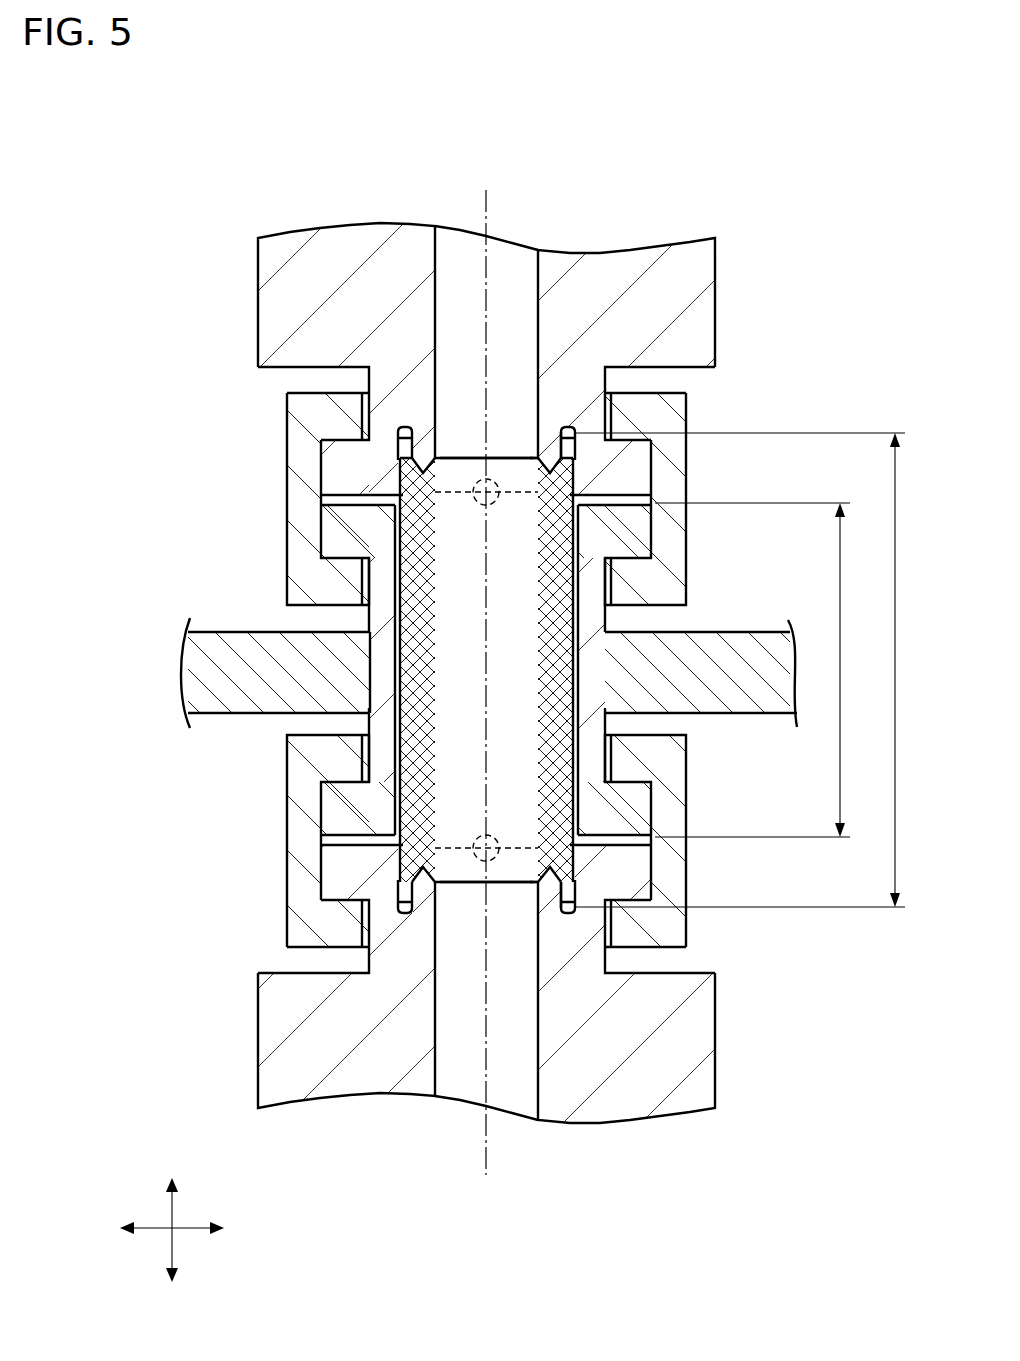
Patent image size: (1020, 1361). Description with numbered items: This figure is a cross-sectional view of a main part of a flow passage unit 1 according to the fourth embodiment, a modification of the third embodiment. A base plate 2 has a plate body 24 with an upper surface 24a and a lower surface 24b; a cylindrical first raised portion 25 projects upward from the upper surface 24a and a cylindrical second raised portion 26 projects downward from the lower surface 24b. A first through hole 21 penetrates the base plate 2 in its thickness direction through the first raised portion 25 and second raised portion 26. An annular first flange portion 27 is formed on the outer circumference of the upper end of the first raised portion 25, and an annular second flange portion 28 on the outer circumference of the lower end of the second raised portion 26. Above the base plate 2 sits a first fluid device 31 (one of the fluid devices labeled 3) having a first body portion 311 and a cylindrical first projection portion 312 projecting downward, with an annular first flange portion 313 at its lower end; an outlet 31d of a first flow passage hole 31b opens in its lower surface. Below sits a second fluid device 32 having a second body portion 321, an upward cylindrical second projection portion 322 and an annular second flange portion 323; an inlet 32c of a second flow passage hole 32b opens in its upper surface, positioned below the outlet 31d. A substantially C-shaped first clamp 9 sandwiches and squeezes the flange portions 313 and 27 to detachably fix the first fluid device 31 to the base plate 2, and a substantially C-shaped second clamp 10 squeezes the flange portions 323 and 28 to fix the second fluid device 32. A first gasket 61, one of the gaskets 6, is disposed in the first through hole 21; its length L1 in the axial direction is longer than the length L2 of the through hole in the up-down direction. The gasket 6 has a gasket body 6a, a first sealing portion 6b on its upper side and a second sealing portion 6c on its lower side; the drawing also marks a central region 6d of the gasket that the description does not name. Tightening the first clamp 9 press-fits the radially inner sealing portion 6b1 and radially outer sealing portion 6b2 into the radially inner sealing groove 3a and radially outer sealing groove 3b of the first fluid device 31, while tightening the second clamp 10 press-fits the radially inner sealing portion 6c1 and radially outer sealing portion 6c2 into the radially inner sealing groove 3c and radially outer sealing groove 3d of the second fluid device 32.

The flow passage unit 1 is at (163, 152).
The base plate 2 is at (194, 616).
The housing 3 is at (444, 685).
The radially inner sealing groove 3a is at (521, 455).
The radially outer sealing groove 3b is at (566, 425).
The radially inner sealing groove 3c is at (521, 887).
The radially outer sealing groove 3d is at (566, 918).
The gasket 6 is at (458, 672).
The gasket body 6a is at (432, 597).
The first sealing portion 6b is at (435, 166).
The radially inner sealing portion 6b1 is at (430, 462).
The radially outer sealing portion 6b2 is at (405, 425).
The second sealing portion 6c is at (435, 1174).
The radially inner sealing portion 6c1 is at (430, 880).
The radially outer sealing portion 6c2 is at (405, 918).
The seal inner space 6d is at (523, 684).
The first gasket 61 is at (461, 448).
The first clamp 9 is at (695, 462).
The second clamp 10 is at (695, 800).
The first through hole 21 is at (388, 668).
The plate body 24 is at (718, 645).
The upper surface 24a is at (785, 640).
The lower surface 24b is at (745, 705).
The first raised portion 25 is at (380, 622).
The second raised portion 26 is at (380, 723).
The first flange portion 27 is at (345, 541).
The second flange portion 28 is at (345, 823).
The first fluid device 31 is at (252, 267).
The first flow passage hole 31b is at (512, 257).
The outlet 31d is at (486, 431).
The first body portion 311 is at (282, 314).
The first projection portion 312 is at (385, 381).
The first flange portion 313 is at (320, 473).
The second fluid device 32 is at (252, 1020).
The second flow passage hole 32b is at (513, 1103).
The inlet 32c is at (486, 914).
The second body portion 321 is at (282, 1056).
The second projection portion 322 is at (385, 965).
The second flange portion 323 is at (345, 878).
The length in the axial direction of the first gasket L1 is at (749, 670).
The length in the up-down direction of the through hole L2 is at (762, 670).